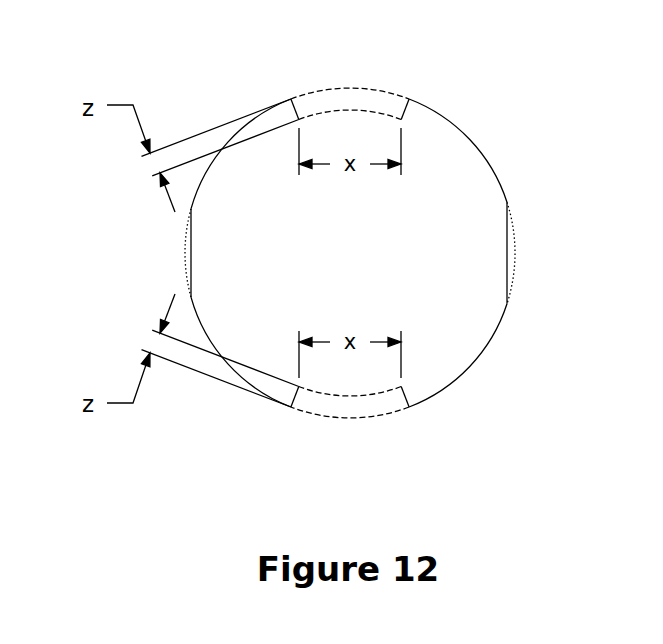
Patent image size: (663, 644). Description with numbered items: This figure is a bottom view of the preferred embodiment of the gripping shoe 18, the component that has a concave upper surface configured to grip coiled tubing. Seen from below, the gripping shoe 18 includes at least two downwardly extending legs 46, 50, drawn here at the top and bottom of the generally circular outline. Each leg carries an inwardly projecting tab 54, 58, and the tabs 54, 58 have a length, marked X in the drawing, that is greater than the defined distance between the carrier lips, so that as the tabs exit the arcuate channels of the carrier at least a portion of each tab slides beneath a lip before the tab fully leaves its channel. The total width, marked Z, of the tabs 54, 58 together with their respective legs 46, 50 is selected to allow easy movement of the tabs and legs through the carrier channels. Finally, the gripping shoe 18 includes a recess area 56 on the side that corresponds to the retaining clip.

The gripping shoe 18 is at (468, 137).
The leg 46 is at (322, 88).
The leg 50 is at (328, 415).
The tab 54 is at (388, 107).
The recess area 56 is at (189, 252).
The tab 58 is at (383, 402).